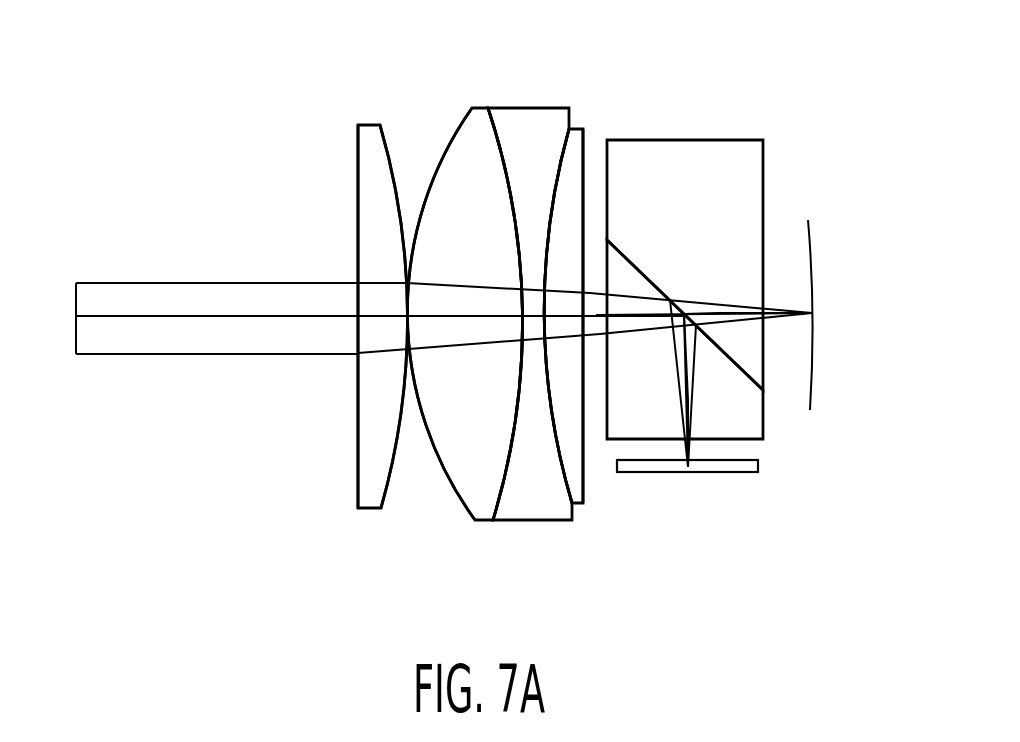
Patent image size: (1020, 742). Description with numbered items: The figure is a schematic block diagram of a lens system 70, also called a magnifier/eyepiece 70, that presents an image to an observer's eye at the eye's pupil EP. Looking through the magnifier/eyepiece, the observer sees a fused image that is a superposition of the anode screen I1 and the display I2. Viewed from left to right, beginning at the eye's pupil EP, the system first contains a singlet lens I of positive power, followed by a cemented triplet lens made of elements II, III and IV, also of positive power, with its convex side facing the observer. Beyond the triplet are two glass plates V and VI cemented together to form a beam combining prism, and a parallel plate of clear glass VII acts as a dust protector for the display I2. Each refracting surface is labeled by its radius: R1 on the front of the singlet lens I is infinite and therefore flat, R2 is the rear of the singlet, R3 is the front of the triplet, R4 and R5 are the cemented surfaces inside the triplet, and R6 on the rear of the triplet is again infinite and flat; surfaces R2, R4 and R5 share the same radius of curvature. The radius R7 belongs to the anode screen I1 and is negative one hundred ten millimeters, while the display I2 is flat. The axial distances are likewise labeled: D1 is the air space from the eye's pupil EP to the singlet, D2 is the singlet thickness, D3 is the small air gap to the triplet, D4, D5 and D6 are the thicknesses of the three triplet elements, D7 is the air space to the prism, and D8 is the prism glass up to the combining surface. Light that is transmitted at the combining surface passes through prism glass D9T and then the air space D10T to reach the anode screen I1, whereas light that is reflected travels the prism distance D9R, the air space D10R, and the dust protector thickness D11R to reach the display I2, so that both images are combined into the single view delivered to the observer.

The lens system 70 is at (194, 144).
The eye's pupil EP is at (205, 297).
The singlet lens I is at (383, 316).
The triplet lens first element II is at (464, 314).
The triplet lens second element III is at (530, 314).
The triplet lens third element IV is at (563, 316).
The glass plate V is at (685, 339).
The glass plate VI is at (685, 265).
The parallel plate of clear glass VII is at (687, 530).
The first lens surface radius R1 is at (355, 138).
The second lens surface radius R2 is at (392, 138).
The third lens surface radius R3 is at (452, 138).
The fourth lens surface radius R4 is at (500, 138).
The fifth lens surface radius R5 is at (563, 138).
The sixth lens surface radius R6 is at (590, 138).
The anode screen radius R7 is at (805, 245).
The air space thickness D1 is at (193, 318).
The singlet lens thickness D2 is at (358, 383).
The air space thickness D3 is at (410, 410).
The lens thickness D4 is at (467, 317).
The lens thickness D5 is at (532, 317).
The lens thickness D6 is at (562, 317).
The air space thickness D7 is at (597, 315).
The prism thickness D8 is at (643, 315).
The prism thickness in transmitted path D9T is at (718, 313).
The transmitted path air space D10T is at (785, 303).
The prism thickness in reflected path D9R is at (690, 389).
The reflected path air space D10R is at (690, 450).
The dust protector thickness D11R is at (742, 471).
The anode screen I1 is at (812, 297).
The display I2 is at (703, 472).